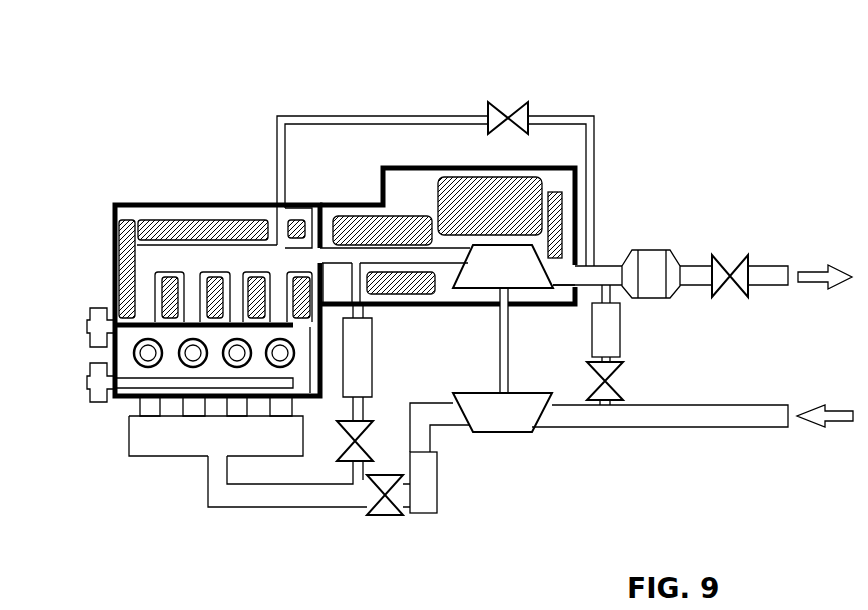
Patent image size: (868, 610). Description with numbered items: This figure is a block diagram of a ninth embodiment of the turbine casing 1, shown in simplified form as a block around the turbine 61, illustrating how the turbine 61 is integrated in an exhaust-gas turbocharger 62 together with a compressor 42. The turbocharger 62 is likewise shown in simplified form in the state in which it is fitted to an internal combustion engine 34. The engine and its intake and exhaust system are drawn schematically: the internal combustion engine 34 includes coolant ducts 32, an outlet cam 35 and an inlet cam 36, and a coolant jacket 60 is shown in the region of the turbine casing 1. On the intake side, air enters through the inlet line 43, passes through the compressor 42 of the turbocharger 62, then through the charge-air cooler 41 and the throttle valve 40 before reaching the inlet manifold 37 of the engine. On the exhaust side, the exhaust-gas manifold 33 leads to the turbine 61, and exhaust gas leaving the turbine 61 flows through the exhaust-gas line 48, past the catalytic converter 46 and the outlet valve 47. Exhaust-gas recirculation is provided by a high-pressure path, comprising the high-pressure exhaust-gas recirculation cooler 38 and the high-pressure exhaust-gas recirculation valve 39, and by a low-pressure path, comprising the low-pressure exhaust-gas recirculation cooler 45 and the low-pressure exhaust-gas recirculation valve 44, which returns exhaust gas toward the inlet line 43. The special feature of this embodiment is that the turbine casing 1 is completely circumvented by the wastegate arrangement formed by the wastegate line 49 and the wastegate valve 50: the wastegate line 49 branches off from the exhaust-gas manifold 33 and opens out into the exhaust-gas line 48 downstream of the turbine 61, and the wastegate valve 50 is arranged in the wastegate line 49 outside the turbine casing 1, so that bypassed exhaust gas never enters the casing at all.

The turbine casing 1 is at (395, 180).
The coolant ducts 32 is at (293, 290).
The exhaust-gas manifold 33 is at (152, 305).
The internal combustion engine 34 is at (122, 343).
The outlet cam 35 is at (82, 325).
The inlet cam 36 is at (82, 378).
The inlet manifold 37 is at (122, 435).
The high-pressure exhaust-gas recirculation cooler 38 is at (337, 393).
The high-pressure exhaust-gas recirculation valve 39 is at (335, 447).
The throttle valve 40 is at (388, 518).
The charge-air cooler 41 is at (442, 483).
The compressor 42 is at (520, 442).
The inlet line 43 is at (687, 430).
The low-pressure exhaust-gas recirculation valve 44 is at (620, 378).
The low-pressure exhaust-gas recirculation cooler 45 is at (625, 328).
The catalytic converter 46 is at (650, 240).
The outlet valve 47 is at (730, 250).
The exhaust-gas line 48 is at (772, 265).
The wastegate line 49 is at (592, 112).
The wastegate valve 50 is at (510, 108).
The coolant jacket 60 is at (477, 200).
The turbine 61 is at (478, 277).
The exhaust-gas turbocharger 62 is at (498, 357).